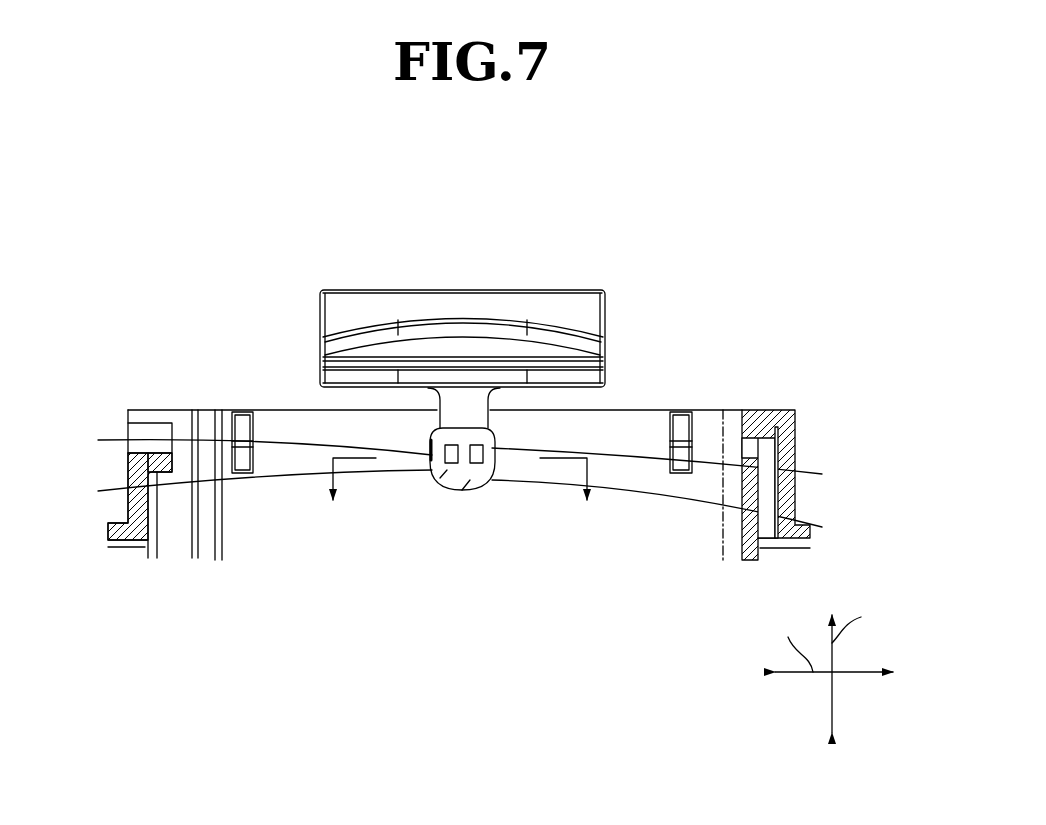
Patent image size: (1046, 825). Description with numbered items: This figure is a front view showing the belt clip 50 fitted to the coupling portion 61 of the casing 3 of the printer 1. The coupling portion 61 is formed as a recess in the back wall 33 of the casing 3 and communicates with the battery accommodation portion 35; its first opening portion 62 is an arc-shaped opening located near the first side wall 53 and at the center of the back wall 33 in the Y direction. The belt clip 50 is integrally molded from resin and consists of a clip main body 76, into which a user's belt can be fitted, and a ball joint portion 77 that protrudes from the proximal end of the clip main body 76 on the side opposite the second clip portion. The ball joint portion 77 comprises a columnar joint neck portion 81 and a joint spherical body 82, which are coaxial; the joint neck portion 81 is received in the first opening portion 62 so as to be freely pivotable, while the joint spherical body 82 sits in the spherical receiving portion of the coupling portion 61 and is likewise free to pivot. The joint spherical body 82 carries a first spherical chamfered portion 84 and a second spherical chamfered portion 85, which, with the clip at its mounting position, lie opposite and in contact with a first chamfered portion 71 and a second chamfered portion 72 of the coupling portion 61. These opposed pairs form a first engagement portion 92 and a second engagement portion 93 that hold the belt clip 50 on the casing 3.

The printer 1 is at (592, 209).
The casing 3 is at (668, 250).
The back wall 33 is at (640, 408).
The battery accommodation portion 35 is at (406, 538).
The belt clip 50 is at (215, 213).
The first side wall 53 is at (518, 533).
The coupling portion 61 is at (470, 492).
The first opening portion 62 is at (481, 414).
The first chamfered portion 71 is at (249, 487).
The second chamfered portion 72 is at (674, 511).
The clip main body 76 is at (392, 284).
The ball joint portion 77 is at (425, 438).
The joint neck portion 81 is at (453, 413).
The joint spherical body 82 is at (455, 478).
The first spherical chamfered portion 84 is at (249, 442).
The second spherical chamfered portion 85 is at (674, 468).
The first engagement portion 92 is at (55, 425).
The second engagement portion 93 is at (872, 468).